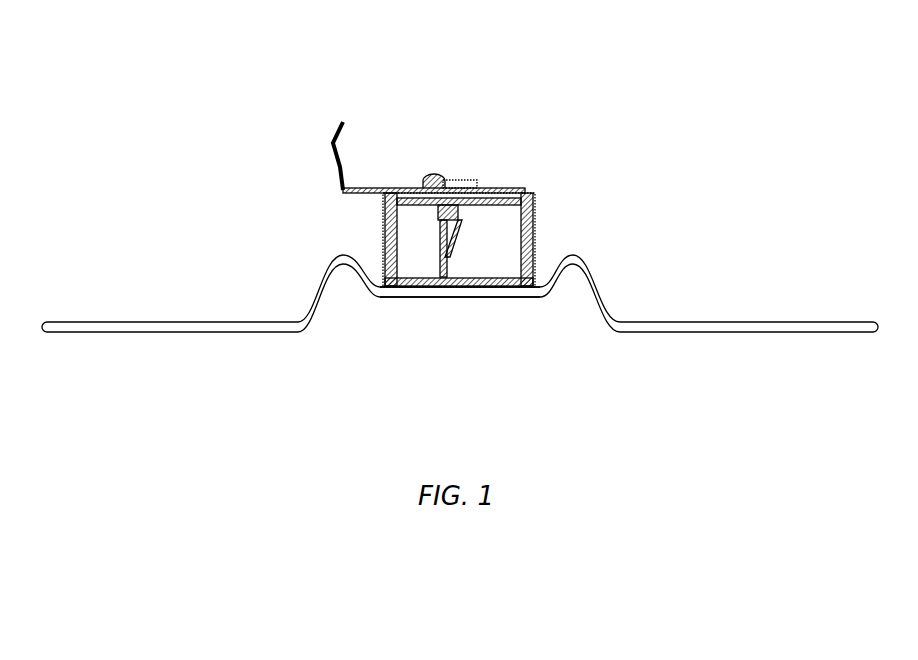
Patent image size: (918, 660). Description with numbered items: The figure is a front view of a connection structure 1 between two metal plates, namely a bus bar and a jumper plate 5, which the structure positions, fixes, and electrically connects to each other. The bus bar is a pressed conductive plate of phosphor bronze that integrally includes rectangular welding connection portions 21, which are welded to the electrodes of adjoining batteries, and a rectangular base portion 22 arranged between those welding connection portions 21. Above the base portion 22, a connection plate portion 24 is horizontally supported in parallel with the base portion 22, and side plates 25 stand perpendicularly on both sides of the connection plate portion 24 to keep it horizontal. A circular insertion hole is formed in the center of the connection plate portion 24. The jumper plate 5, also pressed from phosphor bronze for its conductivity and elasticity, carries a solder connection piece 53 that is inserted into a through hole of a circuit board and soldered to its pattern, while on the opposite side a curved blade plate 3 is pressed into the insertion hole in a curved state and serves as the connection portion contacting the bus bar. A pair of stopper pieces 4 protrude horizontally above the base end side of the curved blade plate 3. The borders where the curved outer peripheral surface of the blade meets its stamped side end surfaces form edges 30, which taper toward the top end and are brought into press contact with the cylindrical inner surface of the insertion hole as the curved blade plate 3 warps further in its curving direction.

The connection structure 1 is at (718, 174).
The welding connection portion 21 is at (780, 330).
The base portion 22 is at (500, 292).
The connection plate portion 24 is at (493, 192).
The side plate 25 is at (383, 245).
The curved blade plate 3 is at (447, 236).
The edge 30 is at (452, 254).
The stopper piece 4 is at (462, 185).
The jumper plate 5 is at (362, 188).
The solder connection piece 53 is at (333, 160).